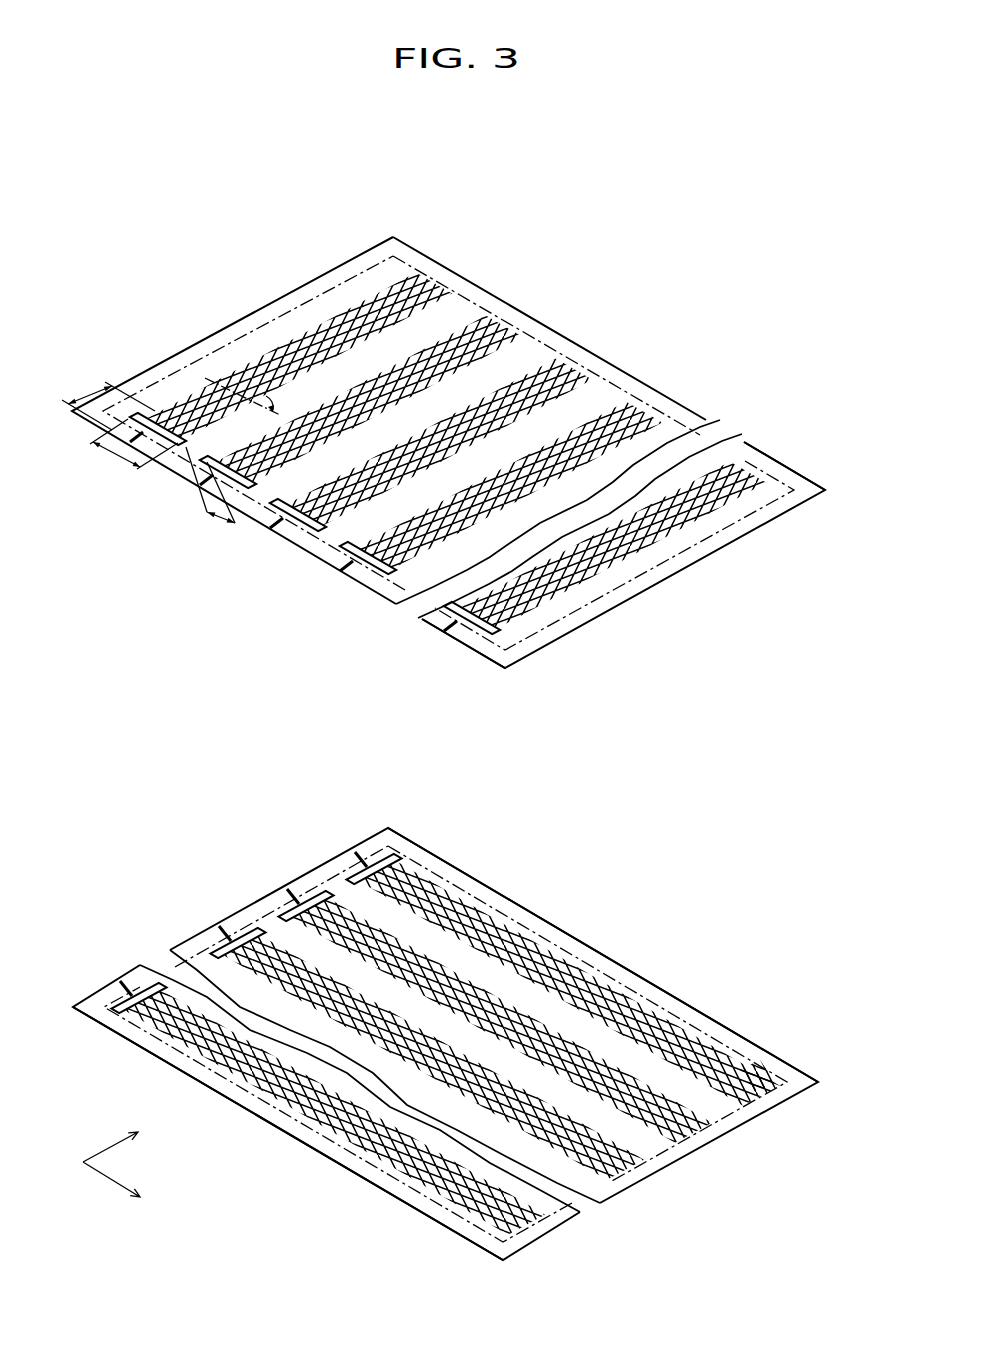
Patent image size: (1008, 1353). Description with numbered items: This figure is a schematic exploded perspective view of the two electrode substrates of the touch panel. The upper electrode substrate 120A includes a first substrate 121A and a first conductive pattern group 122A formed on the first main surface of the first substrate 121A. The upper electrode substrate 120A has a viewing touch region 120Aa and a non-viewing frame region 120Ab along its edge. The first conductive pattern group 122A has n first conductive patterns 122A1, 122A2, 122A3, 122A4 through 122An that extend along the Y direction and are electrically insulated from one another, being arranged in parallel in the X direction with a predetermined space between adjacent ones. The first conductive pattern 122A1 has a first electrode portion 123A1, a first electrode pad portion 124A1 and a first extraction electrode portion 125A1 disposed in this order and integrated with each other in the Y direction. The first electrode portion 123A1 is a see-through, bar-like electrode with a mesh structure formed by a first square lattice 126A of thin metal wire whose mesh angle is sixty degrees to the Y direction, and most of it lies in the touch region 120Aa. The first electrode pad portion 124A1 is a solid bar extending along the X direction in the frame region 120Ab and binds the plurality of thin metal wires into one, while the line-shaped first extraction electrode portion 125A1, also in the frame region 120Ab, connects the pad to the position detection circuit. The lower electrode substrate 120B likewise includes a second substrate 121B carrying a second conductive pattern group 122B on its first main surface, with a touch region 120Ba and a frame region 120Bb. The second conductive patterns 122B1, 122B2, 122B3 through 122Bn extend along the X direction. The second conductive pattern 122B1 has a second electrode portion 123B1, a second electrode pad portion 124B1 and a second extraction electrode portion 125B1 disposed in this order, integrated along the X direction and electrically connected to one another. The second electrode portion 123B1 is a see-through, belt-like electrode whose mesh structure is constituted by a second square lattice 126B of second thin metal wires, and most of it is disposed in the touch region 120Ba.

The upper electrode substrate 120A is at (723, 375).
The touch region 120Aa is at (742, 437).
The frame region 120Ab is at (511, 650).
The first substrate 121A is at (744, 527).
The first conductive pattern group 122A is at (70, 186).
The first conductive pattern 122A1 is at (305, 224).
The first conductive pattern 122A2 is at (348, 405).
The first conductive pattern 122A3 is at (443, 410).
The first conductive pattern 122A4 is at (522, 440).
The first conductive pattern 122An is at (435, 409).
The first electrode portion 123A1 is at (243, 392).
The first electrode pad portion 124A1 is at (162, 435).
The first extraction electrode portion 125A1 is at (134, 424).
The first square lattice 126A is at (665, 528).
The lower electrode substrate 120B is at (732, 988).
The touch region 120Ba is at (590, 962).
The frame region 120Bb is at (348, 1162).
The second substrate 121B is at (737, 1120).
The second conductive pattern group 122B is at (555, 718).
The second conductive pattern 122B1 is at (550, 758).
The second conductive pattern 122B2 is at (343, 903).
The second conductive pattern 122B3 is at (275, 956).
The second conductive pattern 122Bn is at (457, 979).
The second electrode portion 123B1 is at (480, 918).
The second electrode pad portion 124B1 is at (393, 857).
The second extraction electrode portion 125B1 is at (360, 858).
The second square lattice 126B is at (707, 1053).